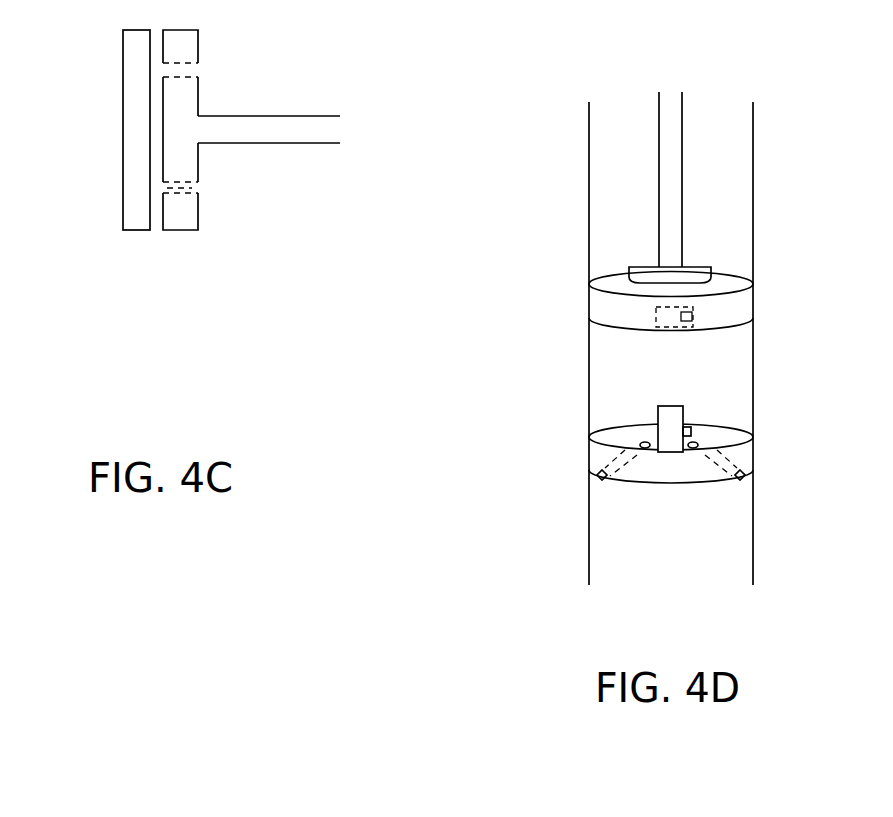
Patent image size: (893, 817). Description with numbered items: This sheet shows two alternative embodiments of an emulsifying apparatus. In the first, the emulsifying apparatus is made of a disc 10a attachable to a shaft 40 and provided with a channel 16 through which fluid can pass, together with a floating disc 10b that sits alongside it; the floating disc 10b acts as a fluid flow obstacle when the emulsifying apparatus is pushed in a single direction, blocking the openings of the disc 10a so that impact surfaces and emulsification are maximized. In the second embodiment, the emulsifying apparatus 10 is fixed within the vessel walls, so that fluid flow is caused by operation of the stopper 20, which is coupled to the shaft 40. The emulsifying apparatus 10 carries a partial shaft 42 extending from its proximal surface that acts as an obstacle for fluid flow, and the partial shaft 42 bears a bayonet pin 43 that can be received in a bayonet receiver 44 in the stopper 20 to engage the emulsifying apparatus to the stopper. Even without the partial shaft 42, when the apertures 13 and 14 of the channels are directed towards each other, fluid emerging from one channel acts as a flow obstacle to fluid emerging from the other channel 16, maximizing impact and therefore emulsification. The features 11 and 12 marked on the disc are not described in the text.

In FIG. 4C, the emulsifying apparatus 10 is at (228, 343).
In FIG. 4D, the emulsifying apparatus 10 is at (745, 453).
In FIG. 4C, the disc 10a is at (177, 231).
In FIG. 4C, the floating disc 10b is at (131, 231).
In FIG. 4C, the channel 16 is at (187, 188).
In FIG. 4C, the shaft 40 is at (310, 115).
In FIG. 4D, the shaft 40 is at (682, 155).
In FIG. 4D, the stopper 20 is at (742, 300).
In FIG. 4D, the bayonet receiver 44 is at (692, 316).
In FIG. 4D, the partial shaft 42 is at (657, 413).
In FIG. 4D, the bayonet pin 43 is at (697, 427).
In FIG. 4D, the aperture 14 is at (645, 443).
In FIG. 4D, the aperture 13 is at (695, 443).
In FIG. 4D, the detector 11 is at (600, 477).
In FIG. 4D, the detector 12 is at (742, 477).